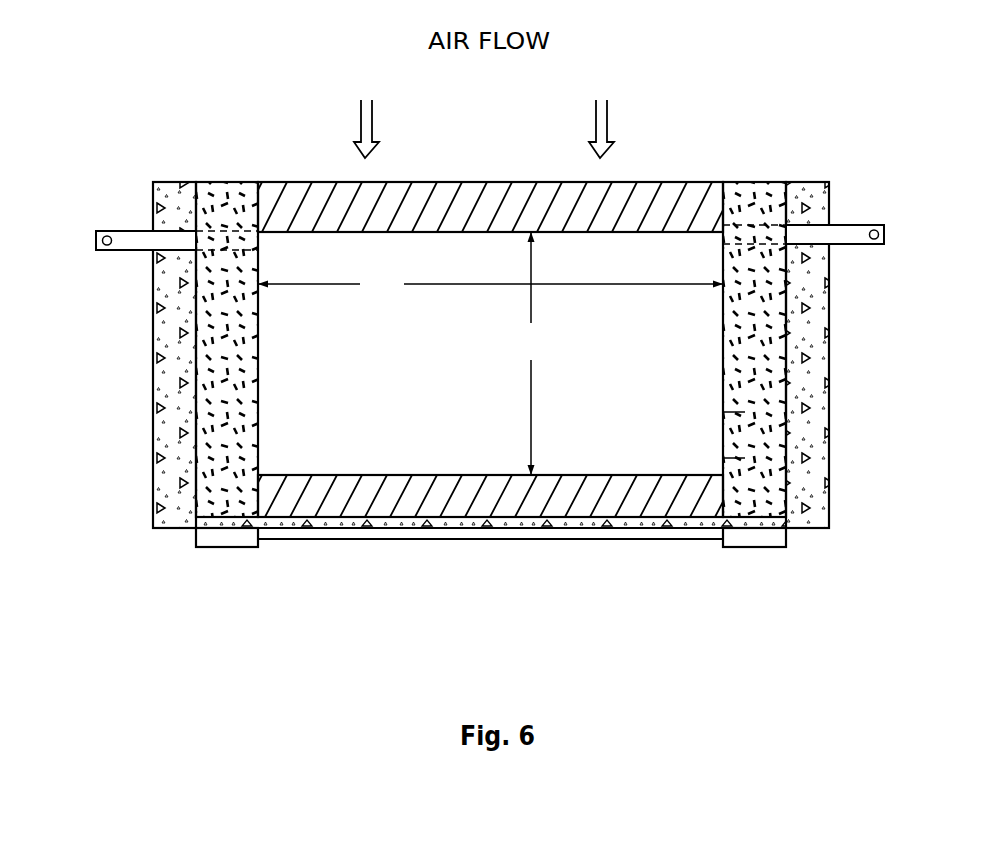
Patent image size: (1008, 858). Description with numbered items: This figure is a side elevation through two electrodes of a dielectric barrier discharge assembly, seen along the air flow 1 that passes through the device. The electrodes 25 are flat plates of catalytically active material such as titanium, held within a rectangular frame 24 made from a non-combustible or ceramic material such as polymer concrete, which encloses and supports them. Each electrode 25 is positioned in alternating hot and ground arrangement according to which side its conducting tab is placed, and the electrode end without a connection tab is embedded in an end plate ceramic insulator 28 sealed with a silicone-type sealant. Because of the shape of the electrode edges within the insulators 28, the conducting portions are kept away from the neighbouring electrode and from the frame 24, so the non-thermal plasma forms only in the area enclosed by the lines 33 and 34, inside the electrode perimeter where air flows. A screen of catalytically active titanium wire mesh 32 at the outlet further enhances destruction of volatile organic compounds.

The air flow 1 is at (595, 127).
The rectangular frame 24 is at (822, 458).
The electrode 25 is at (122, 228).
The end plate ceramic insulator 28 is at (217, 205).
The titanium wire mesh 32 is at (392, 542).
The line 33 is at (490, 284).
The line 34 is at (531, 353).